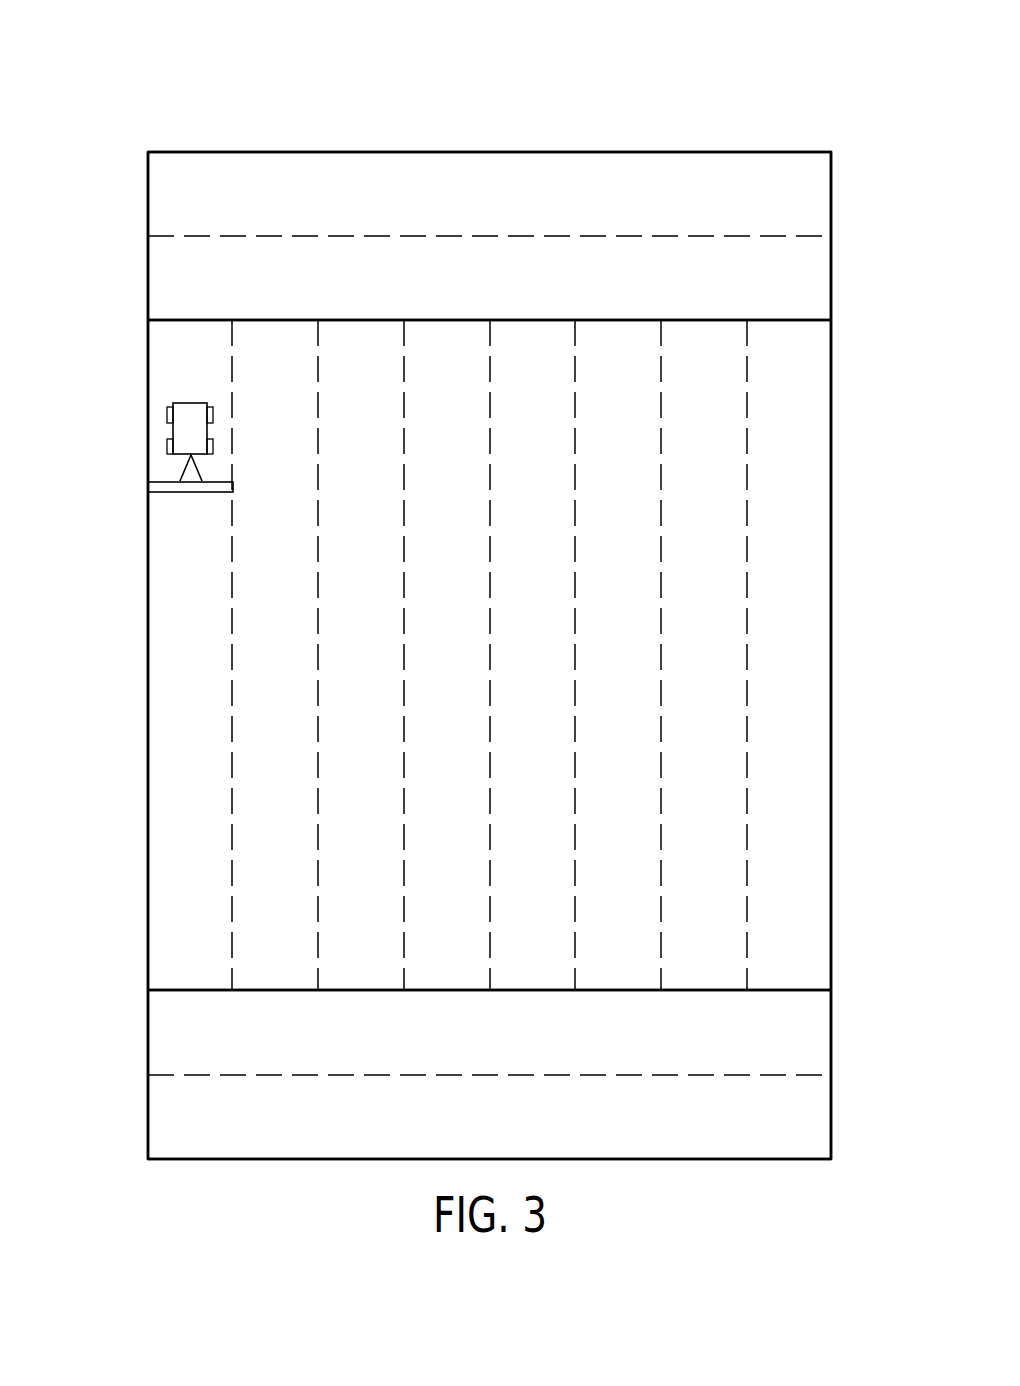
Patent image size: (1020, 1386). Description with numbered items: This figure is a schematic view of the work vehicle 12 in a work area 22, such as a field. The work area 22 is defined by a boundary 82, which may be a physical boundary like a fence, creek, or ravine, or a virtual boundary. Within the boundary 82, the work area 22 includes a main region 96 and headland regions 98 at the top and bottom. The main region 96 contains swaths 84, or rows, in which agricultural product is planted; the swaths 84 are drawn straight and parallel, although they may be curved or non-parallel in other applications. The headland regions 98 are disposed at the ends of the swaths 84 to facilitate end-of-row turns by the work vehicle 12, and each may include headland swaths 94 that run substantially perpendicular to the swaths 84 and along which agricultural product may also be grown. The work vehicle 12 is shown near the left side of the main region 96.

The work area 22 is at (558, 112).
The boundary 82 is at (271, 150).
The headland region 98 is at (760, 184).
The headland swaths 94 is at (166, 205).
The main region 96 is at (798, 411).
The swaths 84 is at (255, 946).
The work vehicle 12 is at (180, 432).